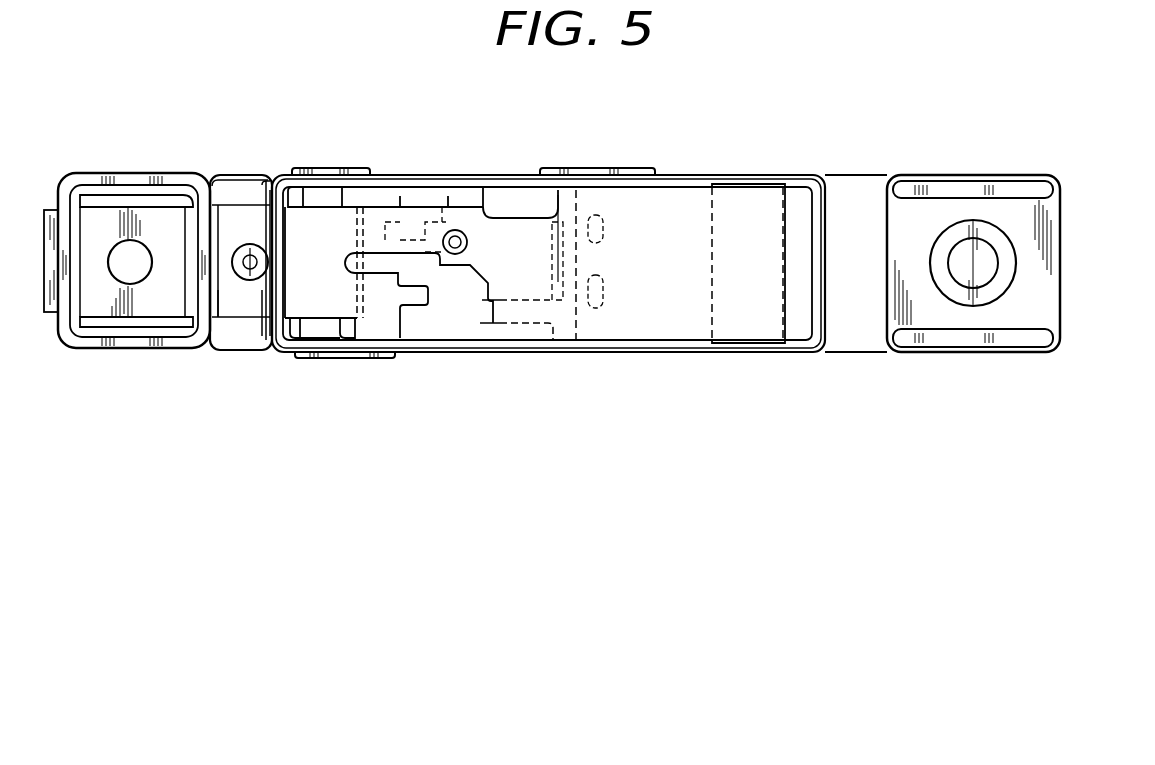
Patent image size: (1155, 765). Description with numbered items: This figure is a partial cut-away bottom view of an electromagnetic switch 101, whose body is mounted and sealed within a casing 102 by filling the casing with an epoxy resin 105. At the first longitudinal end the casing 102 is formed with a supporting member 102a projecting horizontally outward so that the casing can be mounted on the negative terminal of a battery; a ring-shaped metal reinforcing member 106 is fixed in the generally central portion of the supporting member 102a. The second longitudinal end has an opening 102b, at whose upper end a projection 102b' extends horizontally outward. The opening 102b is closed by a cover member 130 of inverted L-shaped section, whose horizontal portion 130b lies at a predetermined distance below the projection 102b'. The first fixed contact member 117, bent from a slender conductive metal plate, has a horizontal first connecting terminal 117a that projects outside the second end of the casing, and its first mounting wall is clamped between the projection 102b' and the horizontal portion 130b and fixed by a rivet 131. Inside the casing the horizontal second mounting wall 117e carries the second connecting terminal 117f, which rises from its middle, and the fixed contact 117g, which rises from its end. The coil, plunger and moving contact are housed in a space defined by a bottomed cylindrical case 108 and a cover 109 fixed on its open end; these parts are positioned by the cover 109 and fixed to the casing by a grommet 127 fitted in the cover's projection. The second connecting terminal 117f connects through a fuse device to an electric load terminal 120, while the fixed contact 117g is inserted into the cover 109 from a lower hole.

The electromagnetic switch 101 is at (1035, 174).
The casing 102 is at (855, 195).
The supporting member 102a is at (1045, 280).
The opening 102b is at (276, 220).
The projection 102b' is at (215, 155).
The epoxy resin 105 is at (620, 310).
The reinforcing member 106 is at (965, 222).
The case 108 is at (650, 310).
The cover 109 is at (498, 338).
The first fixed contact member 117 is at (323, 205).
The first connecting terminal 117a is at (147, 312).
The second mounting wall 117e is at (400, 217).
The second connecting terminal 117f is at (355, 310).
The fixed contact 117g is at (565, 310).
The electric load terminal 120 is at (372, 215).
The grommet 127 is at (458, 230).
The cover member 130 is at (262, 320).
The horizontal portion 130b is at (240, 310).
The rivet 131 is at (240, 242).